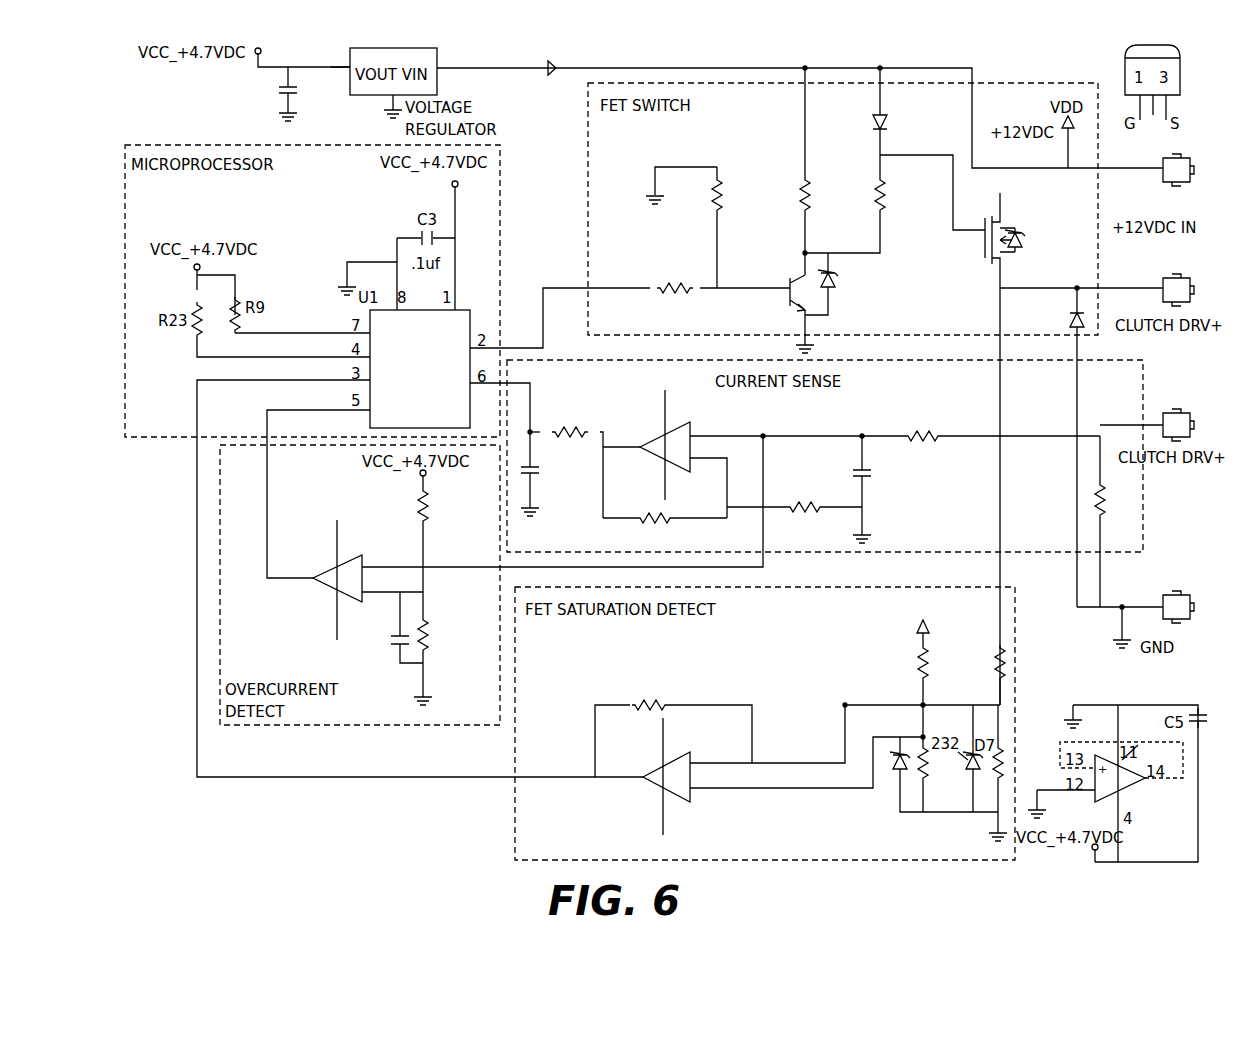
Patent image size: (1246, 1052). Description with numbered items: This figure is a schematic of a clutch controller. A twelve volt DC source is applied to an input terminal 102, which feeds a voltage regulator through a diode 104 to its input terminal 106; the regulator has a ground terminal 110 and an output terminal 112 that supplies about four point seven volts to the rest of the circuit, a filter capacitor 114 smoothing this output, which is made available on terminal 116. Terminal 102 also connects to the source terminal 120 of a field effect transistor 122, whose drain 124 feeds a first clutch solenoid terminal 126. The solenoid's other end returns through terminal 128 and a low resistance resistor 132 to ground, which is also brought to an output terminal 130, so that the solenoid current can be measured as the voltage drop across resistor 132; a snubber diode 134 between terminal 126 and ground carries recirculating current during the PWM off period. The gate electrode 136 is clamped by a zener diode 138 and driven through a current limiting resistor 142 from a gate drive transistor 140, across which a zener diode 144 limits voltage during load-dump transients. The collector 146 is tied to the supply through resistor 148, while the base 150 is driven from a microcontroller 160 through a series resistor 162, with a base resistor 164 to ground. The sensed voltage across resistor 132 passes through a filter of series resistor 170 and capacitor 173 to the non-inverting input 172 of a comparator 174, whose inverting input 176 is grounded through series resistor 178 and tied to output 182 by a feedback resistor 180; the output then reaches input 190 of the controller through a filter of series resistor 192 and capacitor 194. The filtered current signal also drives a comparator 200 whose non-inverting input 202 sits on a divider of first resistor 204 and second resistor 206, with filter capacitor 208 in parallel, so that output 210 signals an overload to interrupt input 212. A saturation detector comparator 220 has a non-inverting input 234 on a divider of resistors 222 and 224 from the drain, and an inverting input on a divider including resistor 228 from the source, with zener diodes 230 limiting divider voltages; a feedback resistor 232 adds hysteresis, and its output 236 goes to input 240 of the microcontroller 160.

The input terminal 102 is at (1192, 166).
The diode 104 is at (548, 78).
The input terminal of voltage regulator 106 is at (440, 72).
The ground terminal 110 is at (388, 102).
The output terminal 112 is at (340, 70).
The filter capacitor 114 is at (280, 95).
The terminal 116 is at (262, 50).
The source terminal 120 is at (988, 222).
The field effect transistor 122 is at (957, 272).
The drain 124 is at (990, 266).
The first clutch solenoid terminal 126 is at (1192, 284).
The terminal 128 is at (1192, 420).
The output terminal 130 is at (1192, 603).
The low resistance resistor 132 is at (1096, 508).
The snubber diode 134 is at (1070, 345).
The gate electrode 136 is at (962, 238).
The zener diode 138 is at (872, 118).
The gate drive transistor 140 is at (785, 290).
The current limiting resistor 142 is at (886, 190).
The zener diode 144 is at (840, 300).
The collector 146 is at (800, 247).
The resistor 148 is at (800, 182).
The base 150 is at (782, 292).
The microcontroller 160 is at (470, 310).
The series resistor 162 is at (680, 298).
The base resistor 164 is at (708, 202).
The series resistor 170 is at (928, 444).
The non-inverting input 172 is at (680, 425).
The capacitor 173 is at (855, 470).
The comparator 174 is at (650, 430).
The inverting input 176 is at (692, 466).
The series resistor 178 is at (800, 516).
The feedback resistor 180 is at (665, 522).
The output 182 is at (650, 458).
The input 190 is at (470, 390).
The series resistor 192 is at (561, 474).
The capacitor 194 is at (518, 470).
The comparator 200 is at (328, 570).
The non-inverting input 202 is at (362, 596).
The first resistor 204 is at (428, 526).
The second resistor 206 is at (428, 648).
The filter capacitor 208 is at (392, 652).
The output 210 is at (322, 582).
The input 212 is at (362, 411).
The saturation detector comparator 220 is at (645, 783).
The resistor 222 is at (1005, 660).
The resistor 224 is at (1003, 755).
The resistor 228 is at (935, 783).
The zener diode 230 is at (895, 780).
The feedback resistor 232 is at (668, 700).
The non-inverting input 234 is at (695, 735).
The output 236 is at (650, 770).
The input 240 is at (352, 380).